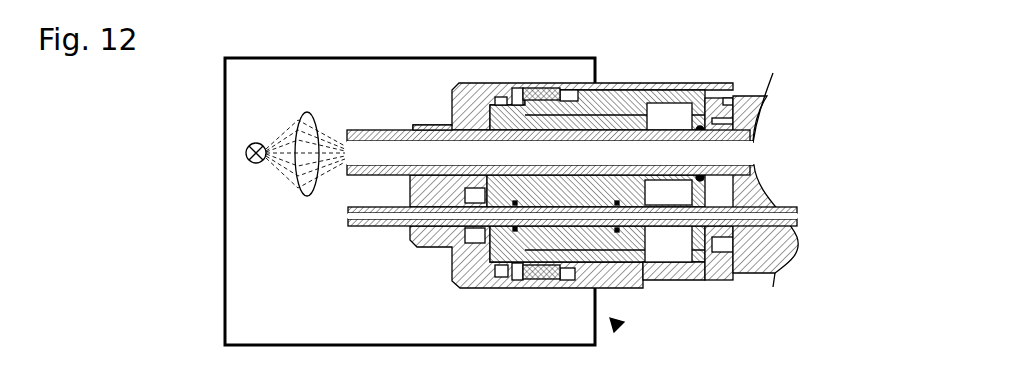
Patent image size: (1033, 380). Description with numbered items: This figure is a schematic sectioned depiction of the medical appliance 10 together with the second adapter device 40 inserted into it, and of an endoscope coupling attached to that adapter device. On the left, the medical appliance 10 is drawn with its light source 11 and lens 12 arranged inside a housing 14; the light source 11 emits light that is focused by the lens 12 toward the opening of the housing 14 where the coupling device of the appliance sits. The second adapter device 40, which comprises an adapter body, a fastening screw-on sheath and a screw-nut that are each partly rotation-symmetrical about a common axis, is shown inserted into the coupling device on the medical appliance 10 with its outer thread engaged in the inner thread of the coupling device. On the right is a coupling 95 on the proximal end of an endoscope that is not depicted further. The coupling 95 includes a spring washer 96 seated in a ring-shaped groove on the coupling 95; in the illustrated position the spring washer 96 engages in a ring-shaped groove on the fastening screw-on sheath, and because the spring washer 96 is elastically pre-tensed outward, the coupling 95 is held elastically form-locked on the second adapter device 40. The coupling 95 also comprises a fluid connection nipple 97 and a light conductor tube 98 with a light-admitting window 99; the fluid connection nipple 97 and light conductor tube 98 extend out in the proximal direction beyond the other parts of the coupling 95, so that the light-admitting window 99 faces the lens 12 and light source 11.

The medical appliance 10 is at (618, 323).
The light source 11 is at (248, 152).
The lens 12 is at (298, 196).
The housing 14 is at (223, 297).
The second adapter device 40 is at (645, 83).
The coupling 95 is at (753, 278).
The spring washer 96 is at (702, 276).
The fluid connection nipple 97 is at (658, 227).
The light conductor tube 98 is at (437, 125).
The light-admitting window 99 is at (341, 130).